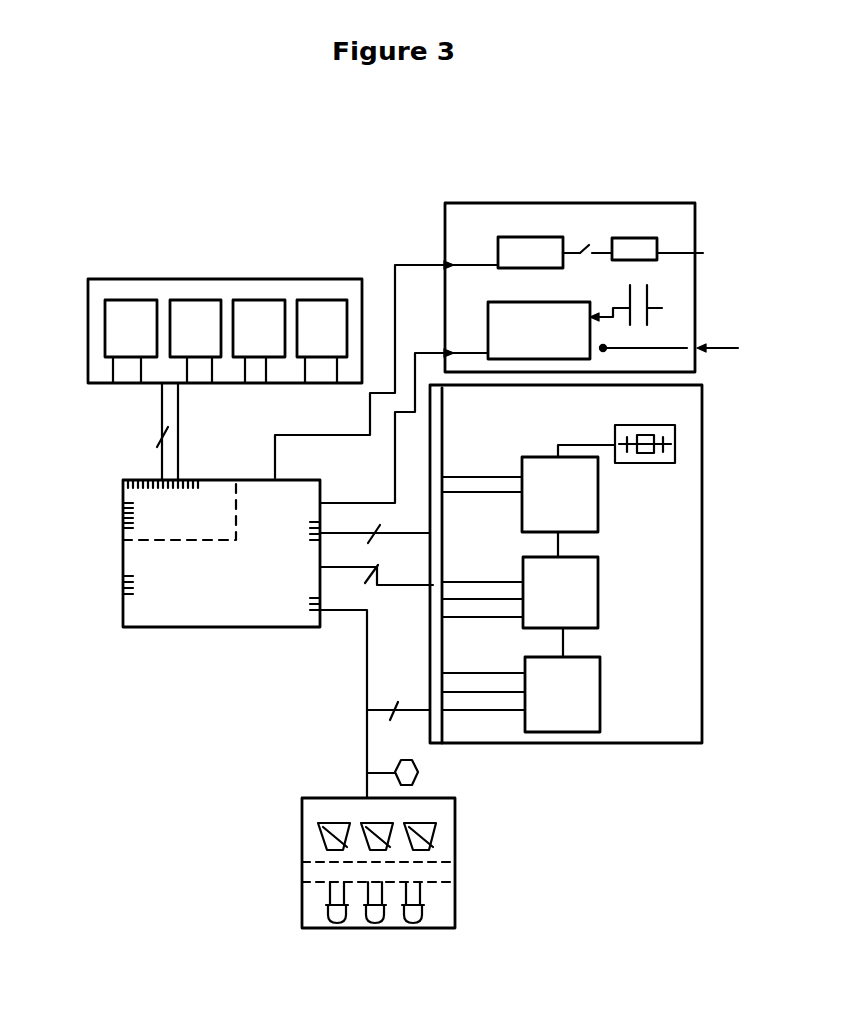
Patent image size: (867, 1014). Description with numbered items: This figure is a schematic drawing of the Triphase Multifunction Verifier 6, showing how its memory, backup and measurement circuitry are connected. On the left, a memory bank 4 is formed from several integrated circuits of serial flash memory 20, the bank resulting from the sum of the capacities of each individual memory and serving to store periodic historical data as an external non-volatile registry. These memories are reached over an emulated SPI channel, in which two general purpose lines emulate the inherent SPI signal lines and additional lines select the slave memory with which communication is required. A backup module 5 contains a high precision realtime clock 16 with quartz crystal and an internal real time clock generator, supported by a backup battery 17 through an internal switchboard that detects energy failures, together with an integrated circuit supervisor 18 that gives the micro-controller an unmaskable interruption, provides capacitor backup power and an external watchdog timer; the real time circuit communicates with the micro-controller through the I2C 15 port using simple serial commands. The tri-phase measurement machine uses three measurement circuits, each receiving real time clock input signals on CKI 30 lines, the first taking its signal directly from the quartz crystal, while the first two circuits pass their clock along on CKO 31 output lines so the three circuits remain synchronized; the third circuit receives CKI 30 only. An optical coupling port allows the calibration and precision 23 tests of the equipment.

The memory bank 4 is at (268, 280).
The backup module 5 is at (613, 218).
The Triphase Multifunction Verifier 6 is at (683, 398).
The I2C port 15 is at (320, 530).
The realtime clock 16 is at (527, 250).
The battery 17 is at (640, 252).
The supervisor 18 is at (560, 345).
The serial flash memory 20 is at (115, 333).
The precision tests 23 is at (422, 932).
The CKI 30 is at (552, 458).
The CKO 31 is at (558, 529).